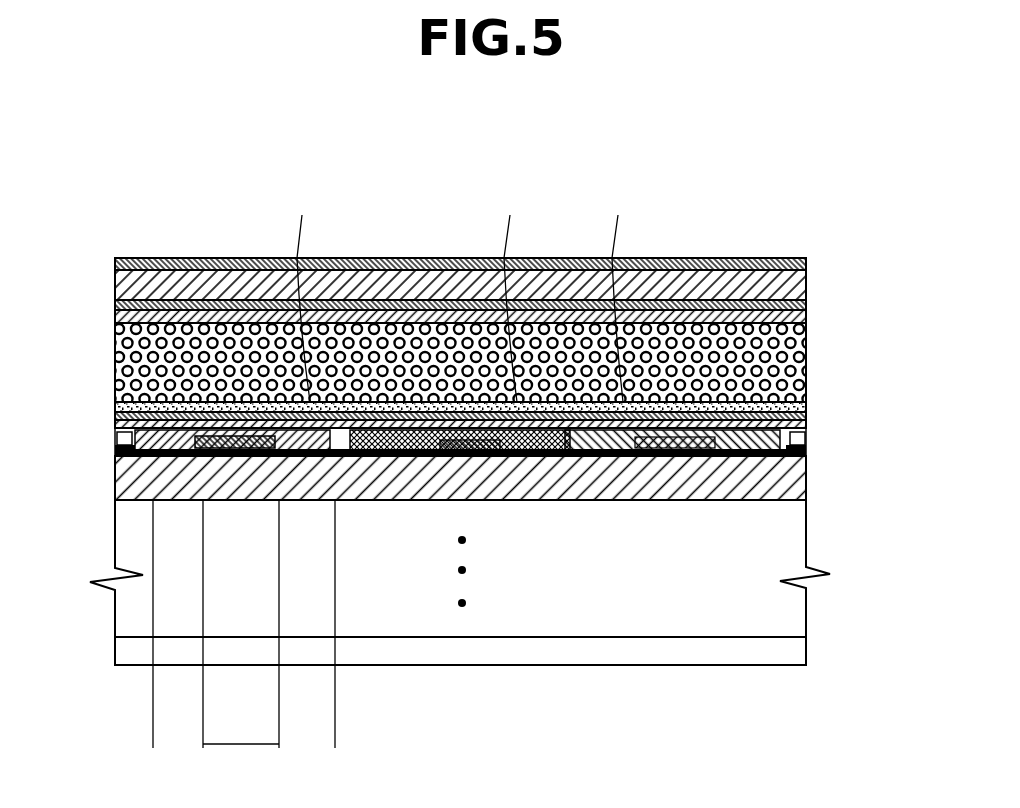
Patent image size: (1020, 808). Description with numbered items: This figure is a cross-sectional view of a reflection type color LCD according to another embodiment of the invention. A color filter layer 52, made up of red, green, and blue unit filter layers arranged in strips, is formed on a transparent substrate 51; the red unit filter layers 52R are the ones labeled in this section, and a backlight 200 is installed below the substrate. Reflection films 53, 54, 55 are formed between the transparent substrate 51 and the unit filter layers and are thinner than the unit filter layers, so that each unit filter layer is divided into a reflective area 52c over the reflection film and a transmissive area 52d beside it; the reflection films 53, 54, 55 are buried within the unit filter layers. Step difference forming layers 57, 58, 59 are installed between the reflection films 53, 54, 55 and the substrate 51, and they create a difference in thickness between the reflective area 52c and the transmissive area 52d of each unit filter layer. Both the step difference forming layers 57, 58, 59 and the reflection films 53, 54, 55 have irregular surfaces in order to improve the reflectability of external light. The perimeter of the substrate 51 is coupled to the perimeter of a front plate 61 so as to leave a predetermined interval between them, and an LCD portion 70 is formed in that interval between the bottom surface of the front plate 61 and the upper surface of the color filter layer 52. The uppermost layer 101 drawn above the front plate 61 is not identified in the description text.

The upper substrate / encapsulation 101 is at (806, 262).
The front plate 61 is at (806, 287).
The LCD portion 70 is at (823, 300).
The red unit filter layer 52R is at (461, 294).
The color filter layer 52 is at (618, 176).
The reflection film 53 is at (257, 452).
The step difference forming layer 57 is at (222, 448).
The step difference forming layer 58 is at (428, 452).
The reflection film 54 is at (483, 452).
The step difference forming layer 59 is at (700, 437).
The transparent substrate 51 is at (130, 461).
The reflection film 55 is at (806, 476).
The backlight 200 is at (795, 656).
The transmissive area 52d is at (203, 744).
The reflective area 52c is at (279, 744).